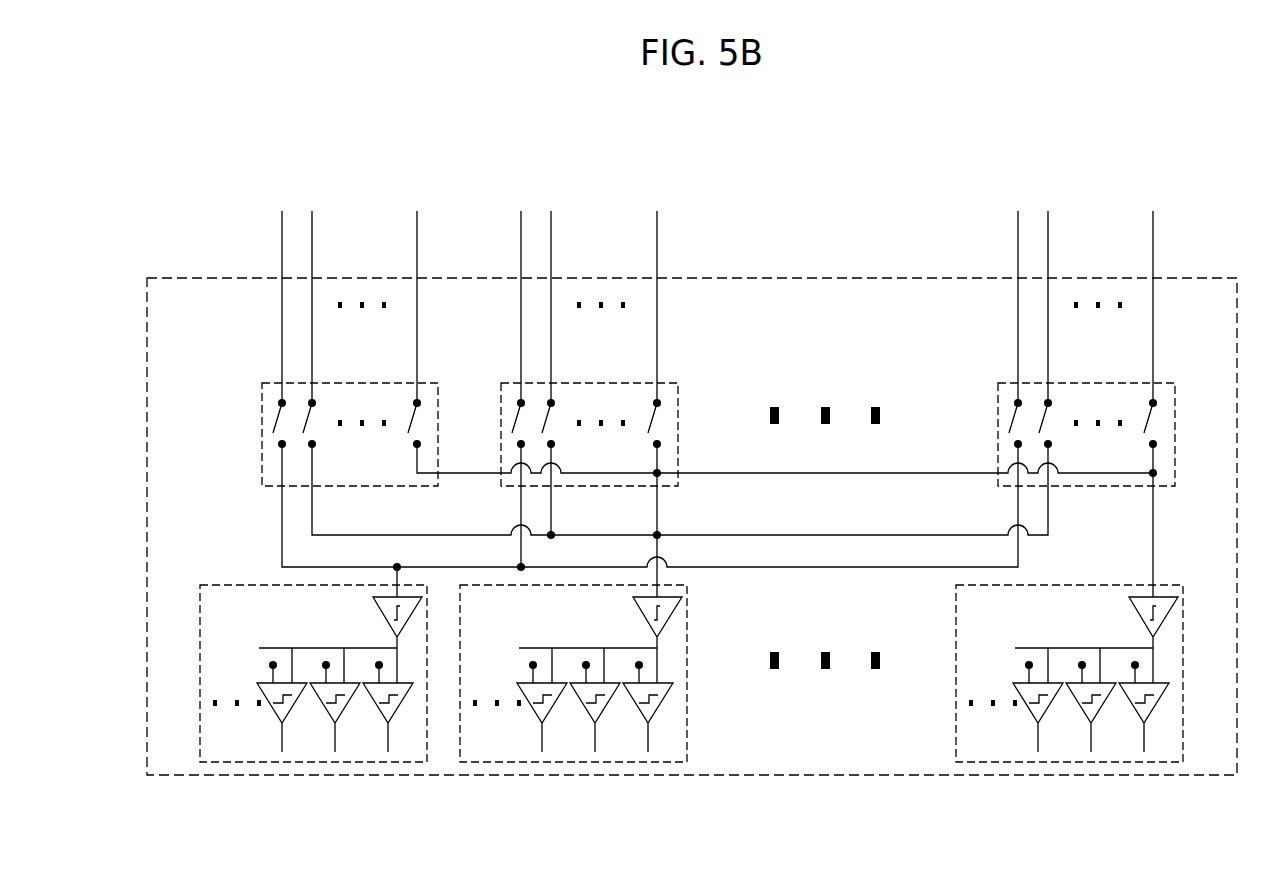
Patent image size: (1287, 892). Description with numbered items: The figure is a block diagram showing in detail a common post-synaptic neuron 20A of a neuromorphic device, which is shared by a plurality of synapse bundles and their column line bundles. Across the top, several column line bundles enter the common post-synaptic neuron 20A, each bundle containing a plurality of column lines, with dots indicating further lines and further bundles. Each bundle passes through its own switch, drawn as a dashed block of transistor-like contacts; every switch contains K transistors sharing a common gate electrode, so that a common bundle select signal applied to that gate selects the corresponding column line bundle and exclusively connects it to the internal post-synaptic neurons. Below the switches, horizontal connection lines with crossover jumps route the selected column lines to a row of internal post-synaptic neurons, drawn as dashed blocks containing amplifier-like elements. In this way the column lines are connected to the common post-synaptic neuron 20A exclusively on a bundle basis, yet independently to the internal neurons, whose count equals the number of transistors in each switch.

The common post-synaptic neuron 20A is at (1199, 278).